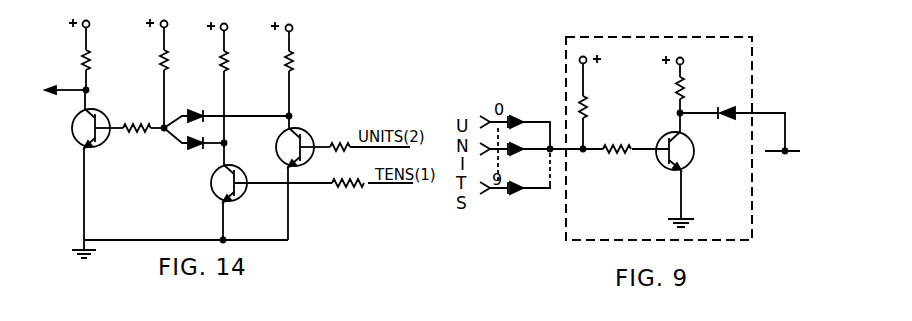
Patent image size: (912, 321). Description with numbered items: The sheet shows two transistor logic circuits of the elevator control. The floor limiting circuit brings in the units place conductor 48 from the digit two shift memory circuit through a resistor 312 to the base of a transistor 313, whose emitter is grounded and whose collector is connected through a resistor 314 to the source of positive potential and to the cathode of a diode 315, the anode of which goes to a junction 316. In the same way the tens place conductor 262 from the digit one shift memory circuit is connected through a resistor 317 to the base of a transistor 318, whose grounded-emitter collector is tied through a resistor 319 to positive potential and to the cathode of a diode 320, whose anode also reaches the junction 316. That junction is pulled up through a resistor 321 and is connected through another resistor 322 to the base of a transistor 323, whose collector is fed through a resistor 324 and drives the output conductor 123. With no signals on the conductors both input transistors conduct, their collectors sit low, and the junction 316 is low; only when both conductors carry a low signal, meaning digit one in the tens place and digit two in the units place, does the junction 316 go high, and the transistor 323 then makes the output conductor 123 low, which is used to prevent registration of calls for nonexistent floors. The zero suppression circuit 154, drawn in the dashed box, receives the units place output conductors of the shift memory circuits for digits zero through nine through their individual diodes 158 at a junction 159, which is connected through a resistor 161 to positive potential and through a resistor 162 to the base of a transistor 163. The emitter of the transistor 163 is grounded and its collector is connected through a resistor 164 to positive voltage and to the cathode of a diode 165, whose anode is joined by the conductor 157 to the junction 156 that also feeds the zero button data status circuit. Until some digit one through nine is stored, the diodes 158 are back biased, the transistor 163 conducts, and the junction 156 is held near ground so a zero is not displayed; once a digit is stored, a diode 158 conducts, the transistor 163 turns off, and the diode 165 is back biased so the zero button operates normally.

In FIG. 14, the resistor 324 is at (89, 63).
In FIG. 14, the resistor 321 is at (167, 63).
In FIG. 14, the resistor 319 is at (228, 64).
In FIG. 14, the resistor 314 is at (293, 64).
In FIG. 14, the output conductor 123 is at (79, 89).
In FIG. 14, the transistor 323 is at (101, 115).
In FIG. 14, the resistor 322 is at (133, 134).
In FIG. 14, the junction 316 is at (164, 132).
In FIG. 14, the diode 315 is at (189, 115).
In FIG. 14, the diode 320 is at (214, 141).
In FIG. 14, the transistor 313 is at (303, 130).
In FIG. 14, the resistor 312 is at (340, 152).
In FIG. 14, the units place conductor 48 is at (408, 149).
In FIG. 14, the transistor 318 is at (211, 185).
In FIG. 14, the resistor 317 is at (343, 189).
In FIG. 14, the tens place conductor 262 is at (413, 198).
In FIG. 9, the diodes 158 is at (514, 153).
In FIG. 9, the zero suppression circuit 154 is at (756, 62).
In FIG. 9, the junction 159 is at (583, 149).
In FIG. 9, the resistor 161 is at (589, 108).
In FIG. 9, the resistor 162 is at (608, 148).
In FIG. 9, the transistor 163 is at (693, 151).
In FIG. 9, the resistor 164 is at (684, 90).
In FIG. 9, the diode 165 is at (727, 110).
In FIG. 9, the conductor 157 is at (764, 114).
In FIG. 9, the junction 156 is at (785, 152).